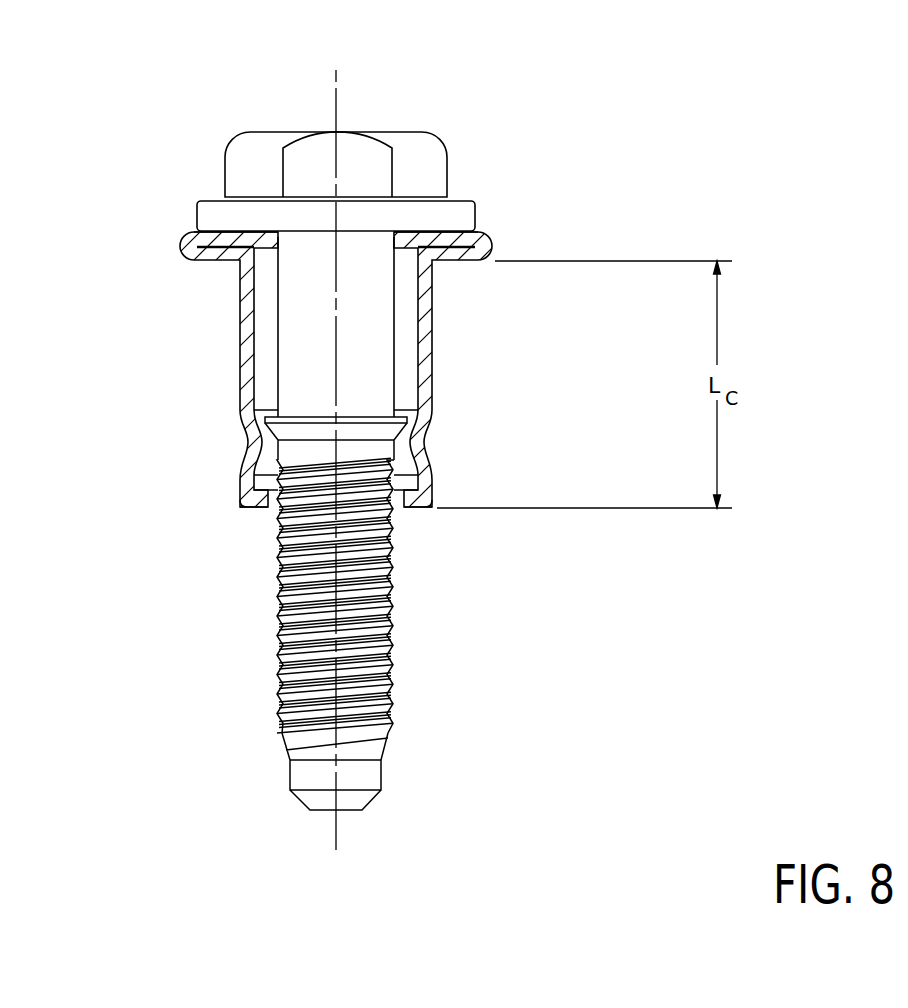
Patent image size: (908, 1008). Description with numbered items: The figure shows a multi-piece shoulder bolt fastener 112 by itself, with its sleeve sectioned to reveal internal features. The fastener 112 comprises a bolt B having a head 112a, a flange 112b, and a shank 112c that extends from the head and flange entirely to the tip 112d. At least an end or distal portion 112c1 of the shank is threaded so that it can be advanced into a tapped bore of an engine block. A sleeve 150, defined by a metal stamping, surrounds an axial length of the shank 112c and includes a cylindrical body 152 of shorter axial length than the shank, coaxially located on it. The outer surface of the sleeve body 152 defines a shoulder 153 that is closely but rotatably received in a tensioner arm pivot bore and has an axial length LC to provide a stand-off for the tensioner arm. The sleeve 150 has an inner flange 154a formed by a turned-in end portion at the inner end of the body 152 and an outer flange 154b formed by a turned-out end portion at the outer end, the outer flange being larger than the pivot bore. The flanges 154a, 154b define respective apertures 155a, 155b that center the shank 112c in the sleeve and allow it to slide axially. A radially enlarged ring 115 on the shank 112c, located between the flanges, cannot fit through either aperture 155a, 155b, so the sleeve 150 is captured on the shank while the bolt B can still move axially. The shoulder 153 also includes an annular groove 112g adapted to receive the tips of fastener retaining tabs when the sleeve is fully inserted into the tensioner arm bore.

The fastener 112 is at (188, 128).
The head 112a is at (342, 155).
The flange 112b is at (467, 200).
The shank 112c is at (312, 310).
The distal portion of the shank 112c1 is at (393, 600).
The tip 112d is at (382, 775).
The annular groove 112g is at (245, 440).
The radially enlarged ring 115 is at (423, 422).
The sleeve 150 is at (185, 232).
The cylindrical body 152 is at (427, 357).
The shoulder 153 is at (237, 363).
The inner flange 154a is at (407, 508).
The outer flange 154b is at (447, 262).
The aperture 155a is at (260, 508).
The aperture 155b is at (254, 247).
The bolt B is at (317, 130).